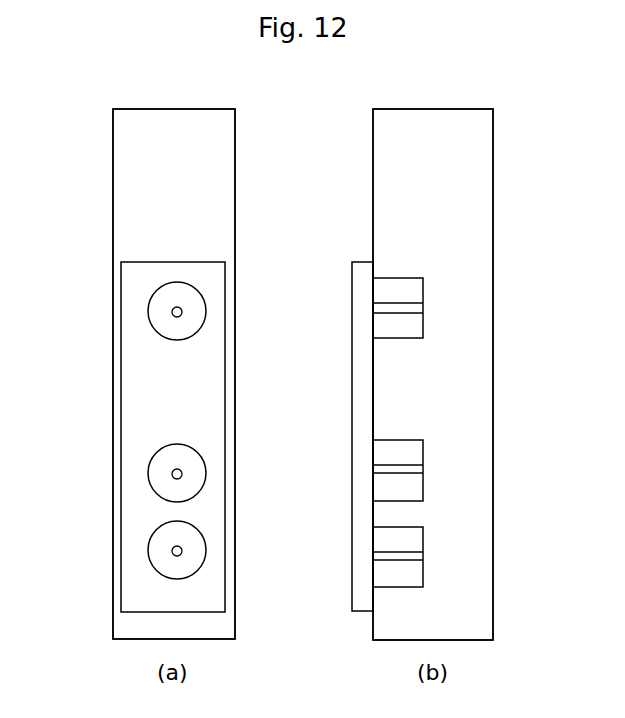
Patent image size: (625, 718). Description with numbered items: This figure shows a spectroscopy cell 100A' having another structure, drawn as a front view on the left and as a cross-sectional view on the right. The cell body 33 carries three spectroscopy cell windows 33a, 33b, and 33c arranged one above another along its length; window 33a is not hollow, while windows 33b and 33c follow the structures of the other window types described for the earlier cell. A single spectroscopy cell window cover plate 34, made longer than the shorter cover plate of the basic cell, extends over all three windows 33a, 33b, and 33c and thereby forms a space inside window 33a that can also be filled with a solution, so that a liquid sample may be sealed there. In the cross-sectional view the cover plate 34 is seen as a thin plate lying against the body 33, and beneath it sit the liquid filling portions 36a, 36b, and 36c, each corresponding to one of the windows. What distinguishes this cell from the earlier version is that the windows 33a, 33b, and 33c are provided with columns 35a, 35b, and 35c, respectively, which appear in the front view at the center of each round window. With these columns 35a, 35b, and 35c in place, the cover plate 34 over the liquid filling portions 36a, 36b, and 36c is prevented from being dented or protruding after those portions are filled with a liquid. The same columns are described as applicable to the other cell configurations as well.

The spectroscopy cell 100A' is at (303, 353).
The exterior body 33 is at (212, 168).
The spectroscopy cell window cover plate 34 is at (156, 263).
The spectroscopy cell window 33a is at (150, 320).
The spectroscopy cell window 33b is at (150, 481).
The spectroscopy cell window 33c is at (150, 559).
The column 35a is at (373, 313).
The column 35b is at (373, 473).
The column 35c is at (373, 560).
The liquid filling portion 36a is at (423, 323).
The liquid filling portion 36b is at (423, 487).
The liquid filling portion 36c is at (423, 573).